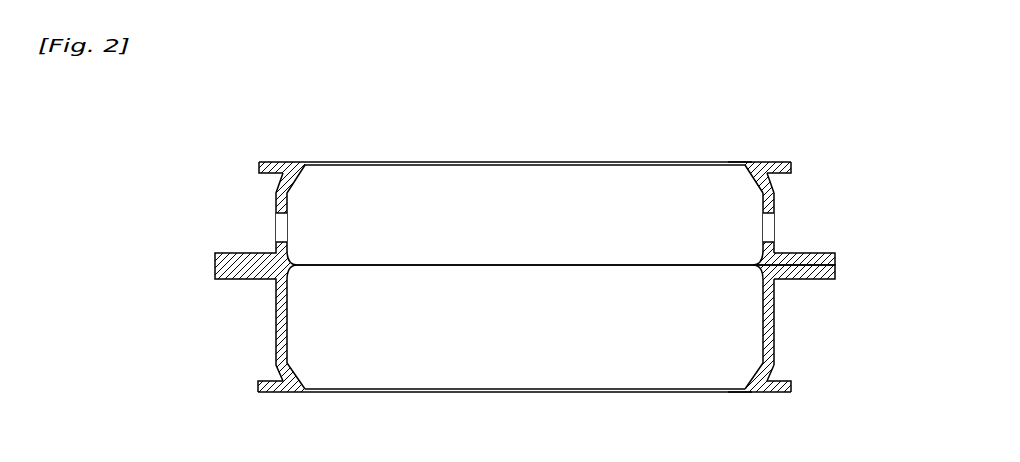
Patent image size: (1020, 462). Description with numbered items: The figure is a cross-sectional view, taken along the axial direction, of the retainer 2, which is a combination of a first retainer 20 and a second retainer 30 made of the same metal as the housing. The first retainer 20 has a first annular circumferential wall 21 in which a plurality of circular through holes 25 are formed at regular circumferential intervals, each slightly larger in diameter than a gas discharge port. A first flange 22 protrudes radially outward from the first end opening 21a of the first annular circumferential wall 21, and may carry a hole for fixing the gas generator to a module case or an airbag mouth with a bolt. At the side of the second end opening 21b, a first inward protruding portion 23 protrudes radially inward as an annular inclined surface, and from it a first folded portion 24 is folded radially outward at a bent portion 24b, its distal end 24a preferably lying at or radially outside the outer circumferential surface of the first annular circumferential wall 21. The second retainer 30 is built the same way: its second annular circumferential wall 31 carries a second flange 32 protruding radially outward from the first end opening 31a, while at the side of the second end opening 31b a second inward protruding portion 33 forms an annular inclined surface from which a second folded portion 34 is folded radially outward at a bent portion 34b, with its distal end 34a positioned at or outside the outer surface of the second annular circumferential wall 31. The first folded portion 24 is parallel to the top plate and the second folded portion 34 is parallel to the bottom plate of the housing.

The retainer 2 is at (133, 213).
The first retainer 20 is at (277, 195).
The first annular circumferential wall 21 is at (774, 200).
The first end opening 21a is at (372, 268).
The second end opening 21b is at (378, 162).
The first flange 22 is at (800, 254).
The first inward protruding portion 23 is at (767, 186).
The first folded portion 24 is at (770, 162).
The distal end 24a is at (258, 162).
The bent portion 24b is at (740, 162).
The through holes 25 is at (276, 231).
The second retainer 30 is at (277, 318).
The second annular circumferential wall 31 is at (776, 336).
The first end opening 31a is at (535, 263).
The second end opening 31b is at (492, 393).
The second flange 32 is at (807, 280).
The second inward protruding portion 33 is at (758, 372).
The second folded portion 34 is at (772, 393).
The distal end 34a is at (258, 393).
The bent portion 34b is at (746, 392).